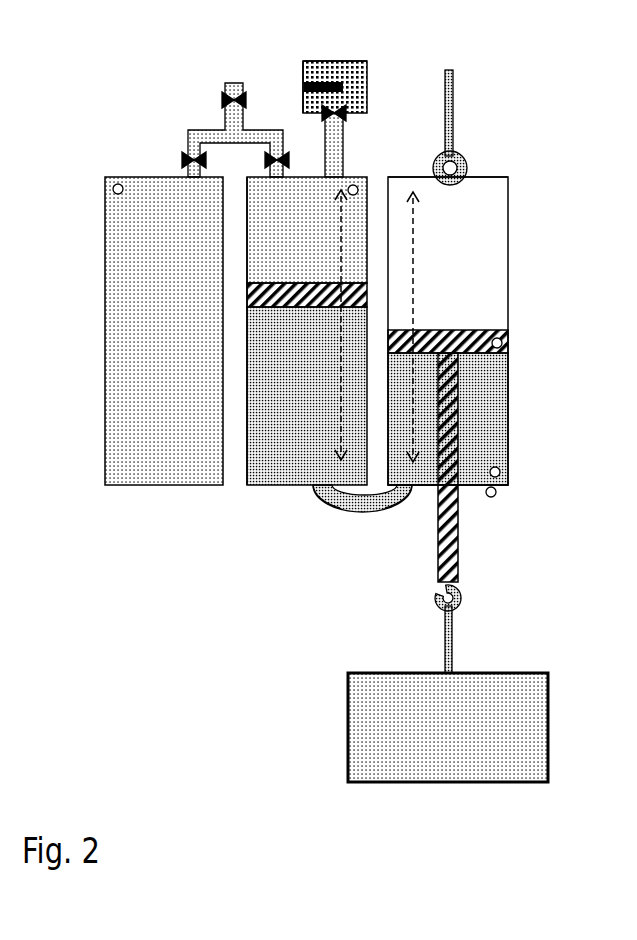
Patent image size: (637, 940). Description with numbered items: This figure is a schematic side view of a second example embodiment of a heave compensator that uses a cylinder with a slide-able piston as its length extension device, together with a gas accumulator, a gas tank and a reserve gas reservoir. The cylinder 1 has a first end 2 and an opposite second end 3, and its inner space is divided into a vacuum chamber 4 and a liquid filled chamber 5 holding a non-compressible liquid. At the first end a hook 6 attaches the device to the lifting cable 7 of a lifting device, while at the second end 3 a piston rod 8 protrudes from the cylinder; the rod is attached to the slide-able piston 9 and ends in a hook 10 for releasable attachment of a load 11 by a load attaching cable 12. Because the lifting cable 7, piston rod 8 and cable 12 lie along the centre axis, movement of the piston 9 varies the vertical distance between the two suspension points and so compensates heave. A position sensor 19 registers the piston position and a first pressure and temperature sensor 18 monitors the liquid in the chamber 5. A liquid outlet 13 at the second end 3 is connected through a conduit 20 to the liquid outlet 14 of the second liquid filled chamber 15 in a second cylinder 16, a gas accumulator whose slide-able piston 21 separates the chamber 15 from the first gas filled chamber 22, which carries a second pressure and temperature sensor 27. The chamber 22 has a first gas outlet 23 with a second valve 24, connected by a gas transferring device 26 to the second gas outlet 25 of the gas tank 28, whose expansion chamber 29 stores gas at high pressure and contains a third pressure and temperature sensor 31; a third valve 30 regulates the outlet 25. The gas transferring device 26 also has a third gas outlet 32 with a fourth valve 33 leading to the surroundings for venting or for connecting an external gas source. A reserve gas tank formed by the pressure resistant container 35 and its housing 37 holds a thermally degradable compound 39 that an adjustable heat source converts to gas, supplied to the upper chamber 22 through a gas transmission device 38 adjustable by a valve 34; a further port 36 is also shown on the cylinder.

The cylinder 1 is at (508, 250).
The first end 2 is at (508, 177).
The second end 3 is at (500, 487).
The vacuum chamber 4 is at (448, 253).
The liquid filled chamber 5 is at (448, 419).
The hook 6 is at (461, 156).
The lifting cable 7 is at (457, 113).
The piston rod 8 is at (457, 467).
The slide-able piston 9 is at (472, 340).
The hook 10 is at (469, 602).
The load 11 is at (448, 727).
The load attaching cable 12 is at (433, 639).
The liquid outlet 13 is at (401, 494).
The liquid outlet 14 is at (314, 490).
The second liquid filled chamber 15 is at (307, 396).
The second cylinder 16 is at (368, 290).
The first pressure and temperature sensor 18 is at (500, 472).
The position sensor 19 is at (502, 343).
The conduit 20 is at (383, 514).
The slide-able piston 21 is at (247, 452).
The first gas filled chamber 22 is at (307, 230).
The first gas outlet 23 is at (272, 178).
The second valve 24 is at (279, 152).
The second gas outlet 25 is at (190, 178).
The gas transferring device 26 is at (196, 133).
The second pressure and temperature sensor 27 is at (356, 185).
The gas tank 28 is at (105, 240).
The expansion chamber 29 is at (164, 331).
The third valve 30 is at (186, 158).
The third pressure and temperature sensor 31 is at (113, 189).
The third gas outlet 32 is at (240, 84).
The fourth valve 33 is at (223, 100).
The valve 34 is at (355, 82).
The pressure resistant container 35 is at (345, 60).
The port 36 is at (496, 494).
The reserve gas tank 37 is at (312, 60).
The gas transmission device 38 is at (331, 160).
The thermally degradable compound 39 is at (366, 62).